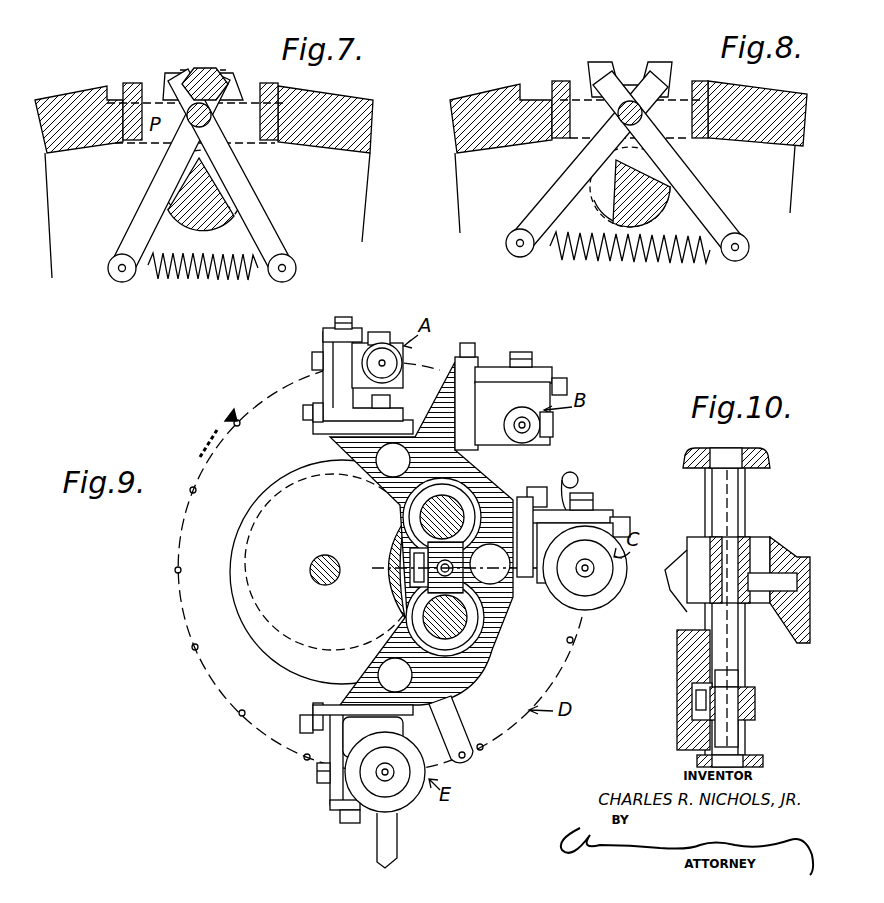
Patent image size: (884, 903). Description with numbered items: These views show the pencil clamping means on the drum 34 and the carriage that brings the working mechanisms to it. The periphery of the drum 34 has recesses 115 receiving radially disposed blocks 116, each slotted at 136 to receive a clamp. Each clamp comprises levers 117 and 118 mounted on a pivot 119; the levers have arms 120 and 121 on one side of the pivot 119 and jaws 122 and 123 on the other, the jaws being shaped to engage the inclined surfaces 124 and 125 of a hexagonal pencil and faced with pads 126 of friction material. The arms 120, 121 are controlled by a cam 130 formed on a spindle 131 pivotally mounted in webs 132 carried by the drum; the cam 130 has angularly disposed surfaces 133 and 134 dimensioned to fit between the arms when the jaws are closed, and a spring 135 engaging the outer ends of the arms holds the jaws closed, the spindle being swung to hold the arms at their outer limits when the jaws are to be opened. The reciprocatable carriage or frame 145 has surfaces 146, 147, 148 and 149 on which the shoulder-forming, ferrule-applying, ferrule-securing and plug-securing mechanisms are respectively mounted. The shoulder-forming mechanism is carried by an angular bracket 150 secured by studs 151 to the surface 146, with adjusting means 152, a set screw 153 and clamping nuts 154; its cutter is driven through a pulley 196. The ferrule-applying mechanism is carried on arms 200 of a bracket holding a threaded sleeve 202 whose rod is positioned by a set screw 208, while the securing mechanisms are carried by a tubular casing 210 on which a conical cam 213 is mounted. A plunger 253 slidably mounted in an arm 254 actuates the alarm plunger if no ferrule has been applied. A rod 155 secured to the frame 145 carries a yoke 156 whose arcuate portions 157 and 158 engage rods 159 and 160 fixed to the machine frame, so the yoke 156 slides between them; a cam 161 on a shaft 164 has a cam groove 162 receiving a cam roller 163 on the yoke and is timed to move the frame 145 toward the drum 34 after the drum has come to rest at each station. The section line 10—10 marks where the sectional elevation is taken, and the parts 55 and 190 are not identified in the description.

In FIG. 9, the section line 10— 10 is at (377, 565).
In FIG. 9, the drum 34 is at (174, 552).
In FIG. 9, the roller 55 is at (490, 558).
In FIG. 7, the recesses 115 is at (110, 87).
In FIG. 8, the recesses 115 is at (520, 90).
In FIG. 7, the blocks 116 is at (263, 140).
In FIG. 8, the blocks 116 is at (560, 85).
In FIG. 7, the lever 117 is at (157, 167).
In FIG. 8, the lever 117 is at (573, 160).
In FIG. 7, the lever 118 is at (250, 217).
In FIG. 8, the lever 118 is at (700, 173).
In FIG. 8, the pivot 119 is at (627, 157).
In FIG. 7, the arm 120 is at (120, 247).
In FIG. 8, the arm 120 is at (523, 220).
In FIG. 7, the arm 121 is at (295, 262).
In FIG. 8, the arm 121 is at (740, 218).
In FIG. 7, the jaw 122 is at (173, 77).
In FIG. 8, the jaw 122 is at (603, 66).
In FIG. 7, the jaw 123 is at (225, 75).
In FIG. 8, the jaw 123 is at (667, 70).
In FIG. 7, the inclined surface 124 is at (197, 67).
In FIG. 7, the inclined surface 125 is at (217, 70).
In FIG. 7, the pads 126 is at (183, 72).
In FIG. 8, the pads 126 is at (610, 62).
In FIG. 7, the cam 130 is at (197, 193).
In FIG. 8, the cam 130 is at (620, 197).
In FIG. 7, the spindle 131 is at (243, 197).
In FIG. 8, the spindle 131 is at (597, 232).
In FIG. 7, the webs 132 is at (347, 190).
In FIG. 8, the webs 132 is at (468, 185).
In FIG. 7, the cam surface 133 is at (250, 180).
In FIG. 8, the cam surface 133 is at (573, 230).
In FIG. 7, the cam surface 134 is at (230, 182).
In FIG. 8, the cam surface 134 is at (670, 160).
In FIG. 7, the spring 135 is at (193, 280).
In FIG. 8, the spring 135 is at (655, 255).
In FIG. 7, the slot 136 is at (147, 88).
In FIG. 8, the slot 136 is at (577, 83).
In FIG. 9, the carriage or frame 145 is at (370, 440).
In FIG. 10, the carriage or frame 145 is at (795, 553).
In FIG. 9, the supporting surface 146 is at (365, 426).
In FIG. 9, the supporting surface 147 is at (470, 380).
In FIG. 9, the supporting surface 148 is at (512, 592).
In FIG. 9, the supporting surface 149 is at (352, 706).
In FIG. 9, the angular bracket 150 is at (323, 388).
In FIG. 9, the clamps or studs 151 is at (390, 400).
In FIG. 9, the adjusting means 152 is at (303, 410).
In FIG. 9, the set screw or stud 153 is at (347, 318).
In FIG. 9, the securing means or nuts 154 is at (318, 352).
In FIG. 10, the rod 155 is at (735, 646).
In FIG. 9, the yoke 156 is at (480, 607).
In FIG. 10, the yoke 156 is at (756, 690).
In FIG. 9, the arcuate portion 157 is at (428, 522).
In FIG. 9, the arcuate portion 158 is at (478, 640).
In FIG. 9, the rod 159 is at (436, 505).
In FIG. 9, the rod 160 is at (440, 615).
In FIG. 10, the rod 160 is at (735, 504).
In FIG. 9, the cam 161 is at (248, 633).
In FIG. 10, the cam 161 is at (687, 645).
In FIG. 9, the cam groove 162 is at (243, 601).
In FIG. 10, the cam groove 162 is at (695, 688).
In FIG. 9, the cam roller 163 is at (415, 573).
In FIG. 10, the cam roller 163 is at (700, 712).
In FIG. 9, the shaft 164 is at (320, 582).
In FIG. 9, the cutter holder 190 is at (402, 360).
In FIG. 9, the pulley 196 is at (386, 347).
In FIG. 9, the arm 200 is at (535, 420).
In FIG. 9, the sleeve 202 is at (553, 425).
In FIG. 9, the set screw 208 is at (556, 430).
In FIG. 9, the tubular casing or sleeve 210 is at (585, 578).
In FIG. 9, the conical cam 213 is at (612, 583).
In FIG. 9, the plunger 253 is at (470, 755).
In FIG. 9, the arm 254 is at (458, 735).